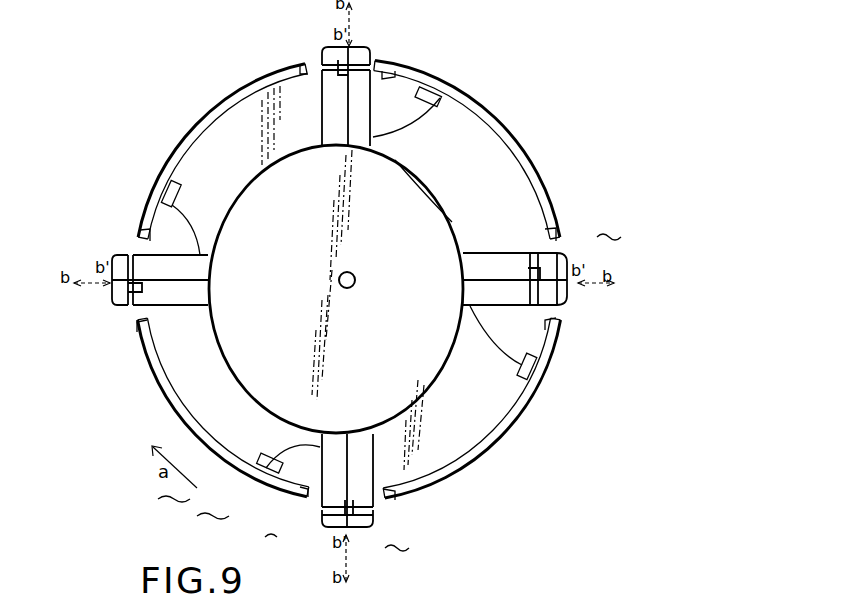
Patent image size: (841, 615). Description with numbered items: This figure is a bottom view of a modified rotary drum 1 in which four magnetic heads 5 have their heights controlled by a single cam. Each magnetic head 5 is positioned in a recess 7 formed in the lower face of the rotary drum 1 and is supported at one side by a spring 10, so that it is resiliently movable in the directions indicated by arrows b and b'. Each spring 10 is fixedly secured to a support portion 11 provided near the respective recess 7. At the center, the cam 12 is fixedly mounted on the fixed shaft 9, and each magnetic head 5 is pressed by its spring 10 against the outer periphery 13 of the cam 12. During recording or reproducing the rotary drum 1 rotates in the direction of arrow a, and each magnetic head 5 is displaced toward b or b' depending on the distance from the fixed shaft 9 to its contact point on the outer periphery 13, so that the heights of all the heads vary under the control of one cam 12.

The rotary drum 1 is at (614, 204).
The magnetic head 5 is at (358, 52).
The recess 7 is at (307, 68).
The fixed shaft 9 is at (356, 277).
The spring 10 is at (393, 125).
The support portion 11 is at (440, 98).
The cam 12 is at (430, 192).
The outer periphery 13 is at (452, 222).